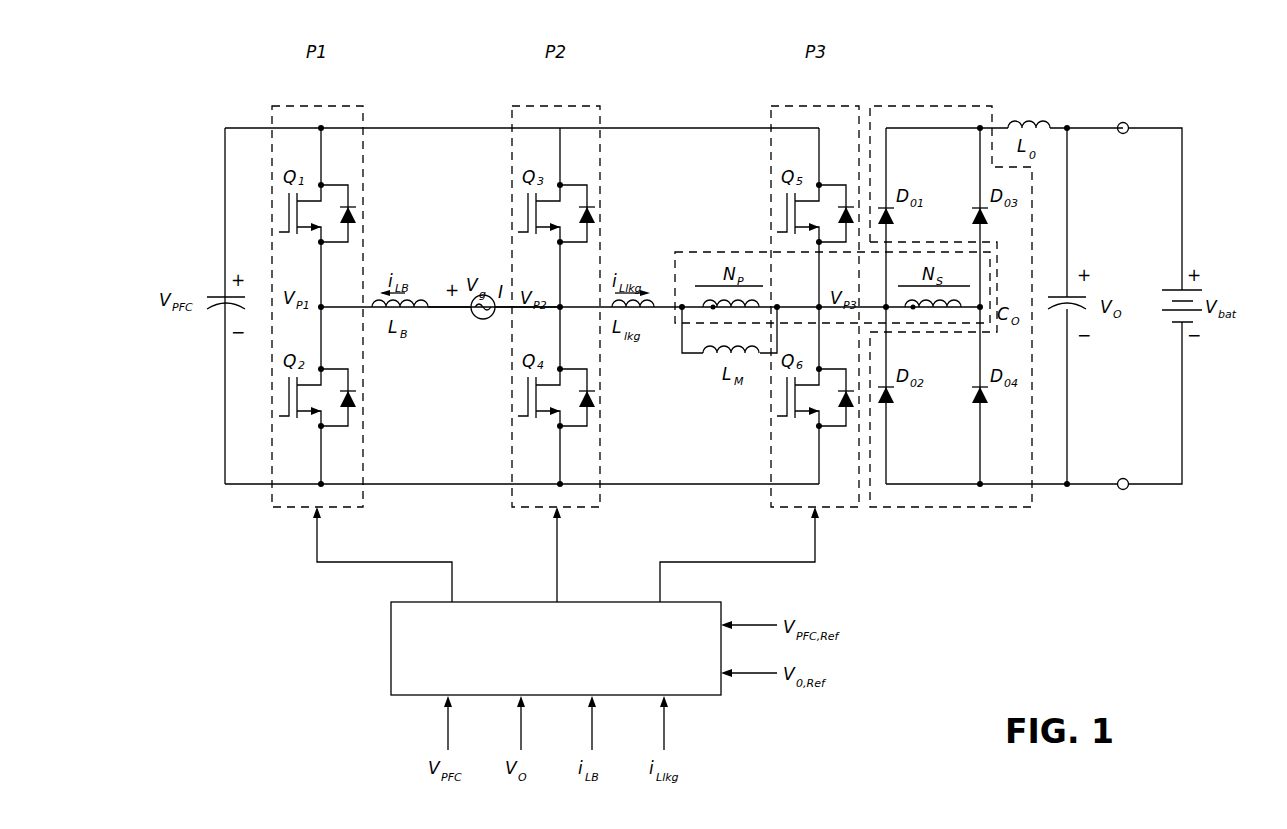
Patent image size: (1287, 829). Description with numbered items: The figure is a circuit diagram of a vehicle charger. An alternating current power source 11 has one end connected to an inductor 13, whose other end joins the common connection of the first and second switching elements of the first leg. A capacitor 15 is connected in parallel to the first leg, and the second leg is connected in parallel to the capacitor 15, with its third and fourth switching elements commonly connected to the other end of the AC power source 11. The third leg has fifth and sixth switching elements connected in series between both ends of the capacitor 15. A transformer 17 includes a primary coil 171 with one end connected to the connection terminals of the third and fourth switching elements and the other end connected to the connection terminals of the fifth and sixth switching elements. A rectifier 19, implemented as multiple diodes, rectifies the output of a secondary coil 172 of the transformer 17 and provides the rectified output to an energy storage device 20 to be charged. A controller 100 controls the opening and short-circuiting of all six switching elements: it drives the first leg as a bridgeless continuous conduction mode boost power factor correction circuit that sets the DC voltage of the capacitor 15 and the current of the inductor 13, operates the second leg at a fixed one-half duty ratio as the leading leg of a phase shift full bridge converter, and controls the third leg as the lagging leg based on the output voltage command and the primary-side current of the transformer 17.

The alternating current power source 11 is at (478, 320).
The inductor 13 is at (423, 293).
The capacitor 15 is at (214, 297).
The transformer 17 is at (832, 321).
The primary coil 171 is at (740, 345).
The secondary coil 172 is at (950, 312).
The rectifier 19 is at (940, 106).
The energy storage device 20 is at (1200, 290).
The controller 100 is at (391, 650).